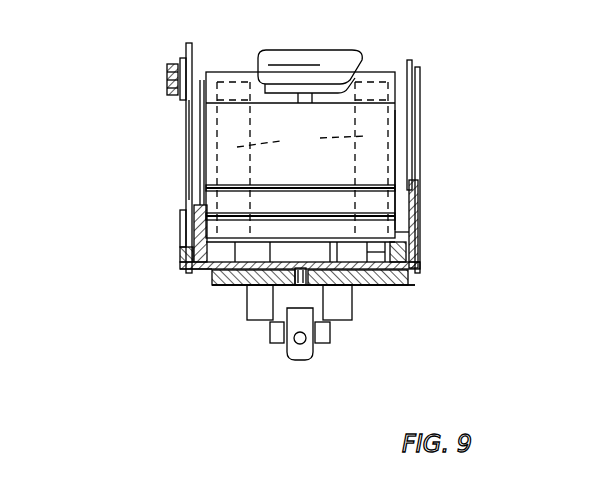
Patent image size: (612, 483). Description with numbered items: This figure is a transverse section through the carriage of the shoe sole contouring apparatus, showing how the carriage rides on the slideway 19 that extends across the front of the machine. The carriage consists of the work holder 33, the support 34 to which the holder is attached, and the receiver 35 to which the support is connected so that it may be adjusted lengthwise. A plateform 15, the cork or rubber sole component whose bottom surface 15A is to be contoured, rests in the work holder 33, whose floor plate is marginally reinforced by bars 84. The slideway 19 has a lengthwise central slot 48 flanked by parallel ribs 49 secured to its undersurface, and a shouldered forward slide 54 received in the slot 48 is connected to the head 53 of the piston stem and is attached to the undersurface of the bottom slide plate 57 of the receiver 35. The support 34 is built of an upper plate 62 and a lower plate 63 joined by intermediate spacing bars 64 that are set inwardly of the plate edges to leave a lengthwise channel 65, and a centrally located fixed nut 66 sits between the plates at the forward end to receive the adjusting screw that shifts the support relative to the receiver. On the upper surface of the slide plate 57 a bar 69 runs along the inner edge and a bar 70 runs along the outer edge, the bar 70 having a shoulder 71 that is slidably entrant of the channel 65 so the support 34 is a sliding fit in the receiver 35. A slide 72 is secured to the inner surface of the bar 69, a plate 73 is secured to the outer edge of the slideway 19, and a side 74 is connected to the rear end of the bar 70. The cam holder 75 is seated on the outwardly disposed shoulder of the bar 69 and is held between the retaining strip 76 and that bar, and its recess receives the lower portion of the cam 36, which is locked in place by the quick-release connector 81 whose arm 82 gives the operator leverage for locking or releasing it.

The plateform 15 is at (357, 82).
The bottom surface 15A is at (316, 62).
The slideway 19 is at (368, 286).
The work holder 33 is at (372, 158).
The support 34 is at (403, 227).
The receiver 35 is at (185, 279).
The cam 36 is at (186, 48).
The central slot 48 is at (327, 294).
The ribs 49 is at (256, 322).
The head 53 is at (300, 365).
The forward slide 54 is at (302, 355).
The bottom slide plate 57 is at (418, 269).
The upper plate 62 is at (186, 222).
The lower plate 63 is at (180, 264).
The intermediate spacing bars 64 is at (242, 277).
The lengthwise channel 65 is at (378, 248).
The fixed nut 66 is at (300, 155).
The bar 69 is at (180, 250).
The bar 70 is at (277, 291).
The shoulder 71 is at (398, 247).
The slide 72 is at (204, 186).
The plate 73 is at (415, 151).
The side 74 is at (413, 94).
The cam holder 75 is at (188, 144).
The retaining strip 76 is at (194, 233).
The connector 81 is at (167, 74).
The arm 82 is at (168, 78).
The bars 84 is at (302, 137).